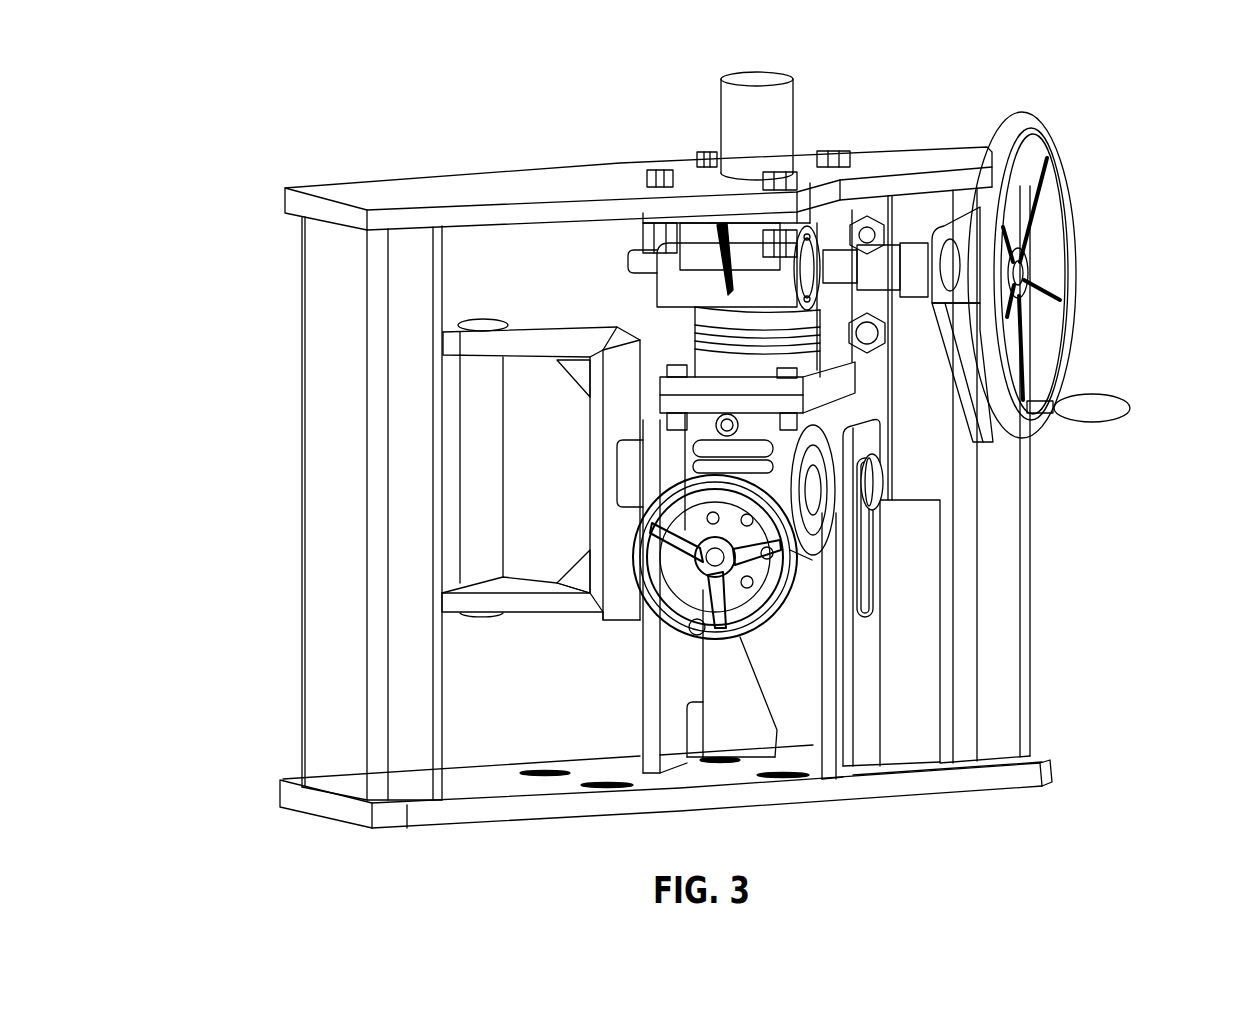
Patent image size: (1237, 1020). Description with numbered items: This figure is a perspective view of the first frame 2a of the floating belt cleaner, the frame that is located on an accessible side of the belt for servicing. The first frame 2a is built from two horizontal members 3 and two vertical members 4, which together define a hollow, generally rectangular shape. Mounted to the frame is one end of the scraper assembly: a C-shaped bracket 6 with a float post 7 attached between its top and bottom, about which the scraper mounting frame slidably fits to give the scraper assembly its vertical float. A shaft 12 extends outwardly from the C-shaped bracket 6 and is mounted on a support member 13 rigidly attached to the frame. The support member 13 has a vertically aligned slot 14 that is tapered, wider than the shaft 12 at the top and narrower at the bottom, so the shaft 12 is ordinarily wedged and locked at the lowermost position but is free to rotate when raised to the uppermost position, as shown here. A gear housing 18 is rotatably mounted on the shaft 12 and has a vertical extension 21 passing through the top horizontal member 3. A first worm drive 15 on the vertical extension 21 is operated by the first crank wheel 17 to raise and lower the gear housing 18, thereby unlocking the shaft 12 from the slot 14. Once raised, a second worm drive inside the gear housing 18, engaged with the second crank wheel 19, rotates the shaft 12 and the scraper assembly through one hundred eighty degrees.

The first frame 2a is at (403, 144).
The horizontal member 3 is at (915, 162).
The vertical member 4 is at (335, 450).
The C-shaped bracket 6 is at (570, 333).
The float post 7 is at (480, 430).
The shaft 12 is at (875, 485).
The support member 13 is at (868, 650).
The slot 14 is at (870, 573).
The first worm drive 15 is at (698, 285).
The first crank wheel 17 is at (1073, 272).
The gear housing 18 is at (818, 600).
The second crank wheel 19 is at (660, 617).
The vertical extension 21 is at (768, 125).